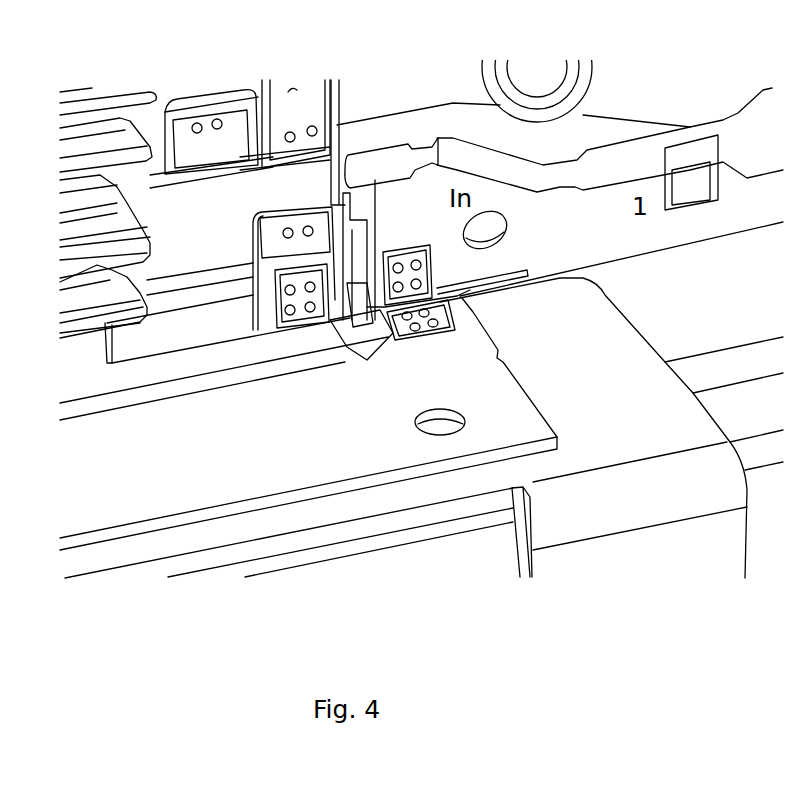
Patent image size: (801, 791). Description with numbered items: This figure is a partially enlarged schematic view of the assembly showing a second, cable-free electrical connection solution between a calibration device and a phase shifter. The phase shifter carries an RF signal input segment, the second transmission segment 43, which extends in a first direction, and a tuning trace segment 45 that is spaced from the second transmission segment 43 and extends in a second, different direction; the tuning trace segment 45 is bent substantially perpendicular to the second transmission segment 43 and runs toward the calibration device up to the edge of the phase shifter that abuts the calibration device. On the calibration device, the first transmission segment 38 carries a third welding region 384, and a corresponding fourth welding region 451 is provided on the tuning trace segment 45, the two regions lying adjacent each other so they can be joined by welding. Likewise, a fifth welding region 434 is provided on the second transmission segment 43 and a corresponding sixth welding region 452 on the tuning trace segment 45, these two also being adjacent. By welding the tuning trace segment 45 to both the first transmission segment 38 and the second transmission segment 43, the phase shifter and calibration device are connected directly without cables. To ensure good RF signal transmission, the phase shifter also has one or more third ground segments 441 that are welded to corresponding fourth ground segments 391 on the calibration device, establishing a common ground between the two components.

The first transmission segment 38 is at (257, 390).
The third welding region 384 is at (370, 343).
The fourth ground segment 391 is at (433, 318).
The second transmission segment 43 is at (420, 158).
The fifth welding region 434 is at (355, 167).
The third ground segment 441 is at (423, 273).
The tuning trace segment 45 is at (347, 243).
The fourth welding region 451 is at (347, 310).
The sixth welding region 452 is at (347, 205).